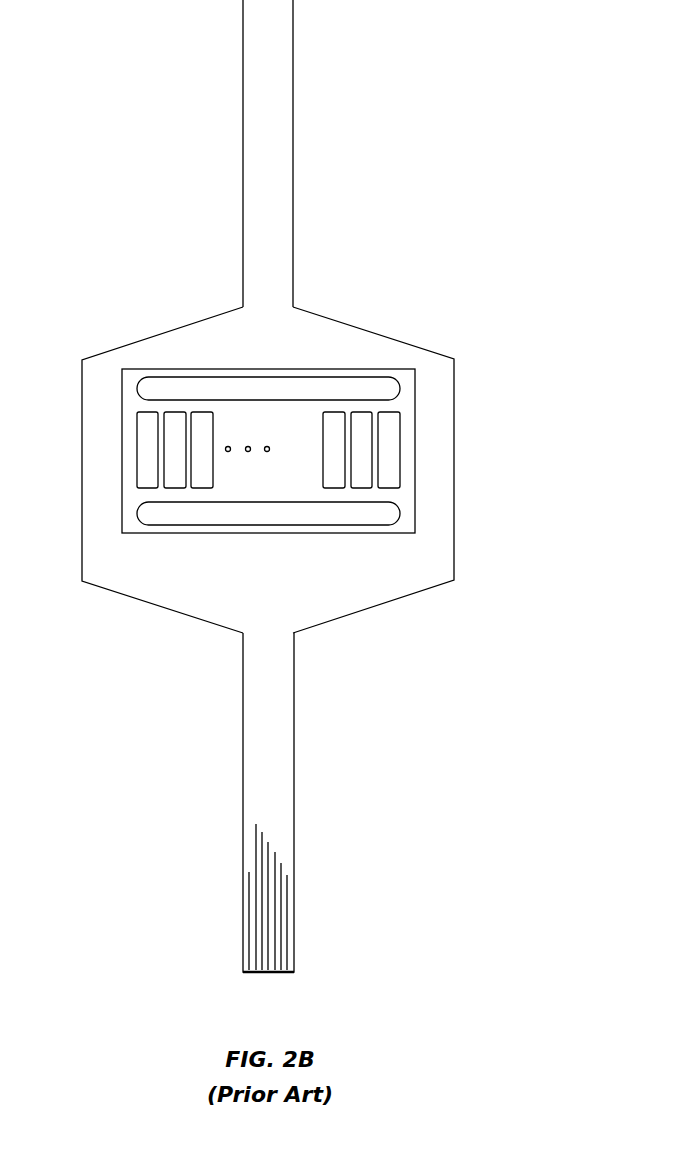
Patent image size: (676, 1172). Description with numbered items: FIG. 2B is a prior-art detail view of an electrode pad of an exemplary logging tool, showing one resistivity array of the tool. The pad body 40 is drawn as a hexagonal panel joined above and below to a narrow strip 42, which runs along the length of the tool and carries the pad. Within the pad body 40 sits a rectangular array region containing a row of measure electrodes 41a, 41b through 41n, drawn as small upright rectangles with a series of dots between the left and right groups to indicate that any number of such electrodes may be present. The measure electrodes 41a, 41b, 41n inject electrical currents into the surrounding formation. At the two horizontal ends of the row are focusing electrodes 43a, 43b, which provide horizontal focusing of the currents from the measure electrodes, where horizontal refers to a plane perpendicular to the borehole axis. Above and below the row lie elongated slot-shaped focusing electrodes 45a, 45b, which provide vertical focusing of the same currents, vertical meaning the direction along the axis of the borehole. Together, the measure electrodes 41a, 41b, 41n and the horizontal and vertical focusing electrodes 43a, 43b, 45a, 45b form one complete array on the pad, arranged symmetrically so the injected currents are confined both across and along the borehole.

The flex circuit / chip carrier substrate 40 is at (328, 315).
The flexible tape / lead strip 42 is at (294, 183).
The measure electrode 41a is at (178, 432).
The measure electrode 41b is at (200, 472).
The measure electrode 41n is at (359, 430).
The focusing electrode 43a is at (147, 442).
The focusing electrode 43b is at (393, 441).
The focusing electrode 45a is at (217, 368).
The focusing electrode 45b is at (387, 512).